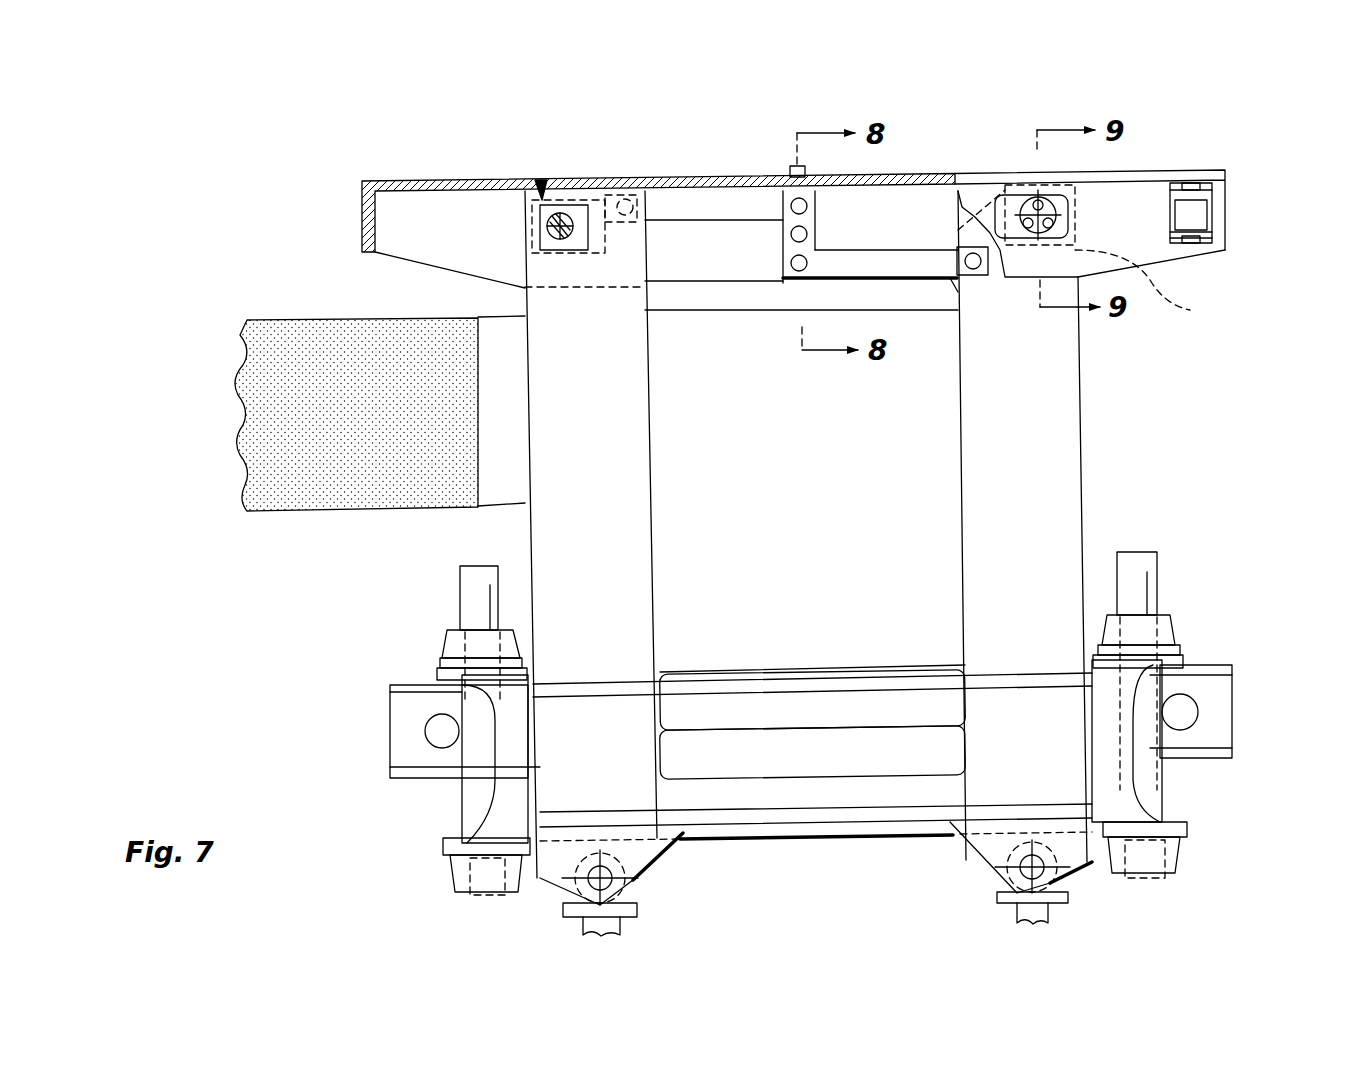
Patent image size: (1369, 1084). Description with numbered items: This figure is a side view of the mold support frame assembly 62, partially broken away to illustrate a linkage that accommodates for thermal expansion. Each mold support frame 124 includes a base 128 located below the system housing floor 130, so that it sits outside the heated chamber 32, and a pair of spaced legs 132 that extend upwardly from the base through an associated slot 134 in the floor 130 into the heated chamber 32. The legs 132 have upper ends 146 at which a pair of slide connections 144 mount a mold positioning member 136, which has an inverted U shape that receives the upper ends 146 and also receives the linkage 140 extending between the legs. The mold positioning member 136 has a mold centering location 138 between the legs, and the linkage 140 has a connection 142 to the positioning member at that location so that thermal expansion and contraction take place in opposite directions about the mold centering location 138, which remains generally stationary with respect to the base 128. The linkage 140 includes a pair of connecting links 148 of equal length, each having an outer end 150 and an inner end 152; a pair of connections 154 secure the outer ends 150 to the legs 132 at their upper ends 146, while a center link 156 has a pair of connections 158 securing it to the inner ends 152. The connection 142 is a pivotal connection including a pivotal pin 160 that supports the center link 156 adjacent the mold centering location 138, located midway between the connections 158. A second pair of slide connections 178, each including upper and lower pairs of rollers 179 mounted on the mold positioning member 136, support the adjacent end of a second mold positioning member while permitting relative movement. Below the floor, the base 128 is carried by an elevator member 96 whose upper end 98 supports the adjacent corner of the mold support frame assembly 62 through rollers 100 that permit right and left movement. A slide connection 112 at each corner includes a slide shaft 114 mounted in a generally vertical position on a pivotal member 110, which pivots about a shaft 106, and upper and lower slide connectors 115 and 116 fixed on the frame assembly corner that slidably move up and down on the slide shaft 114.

The heated chamber 32 is at (303, 318).
The mold support frame assembly 62 is at (1135, 493).
The elevator member 96 is at (588, 928).
The upper end 98 is at (630, 912).
The rollers 100 is at (560, 893).
The shaft 106 is at (437, 732).
The pivotal member 110 is at (402, 705).
The slide connection 112 is at (433, 660).
The slide shaft 114 is at (472, 600).
The upper slide connector 115 is at (452, 640).
The lower slide connector 116 is at (470, 868).
The mold support frame 124 is at (1100, 401).
The base 128 is at (812, 800).
The floor 130 is at (270, 428).
The legs 132 is at (645, 450).
The slot 134 is at (490, 470).
The mold positioning member 136 is at (598, 190).
The mold centering location 138 is at (790, 168).
The linkage 140 is at (875, 216).
The connection 142 is at (815, 236).
The slide connections 144 is at (540, 183).
The upper ends 146 is at (525, 243).
The connecting links 148 is at (655, 200).
The outer end 150 is at (625, 222).
The inner end 152 is at (690, 192).
The connections 154 is at (565, 185).
The center link 156 is at (783, 245).
The connections 158 is at (808, 206).
The pivotal pin 160 is at (797, 232).
The second pair of slide connections 178 is at (1218, 190).
The rollers 179 is at (1192, 183).